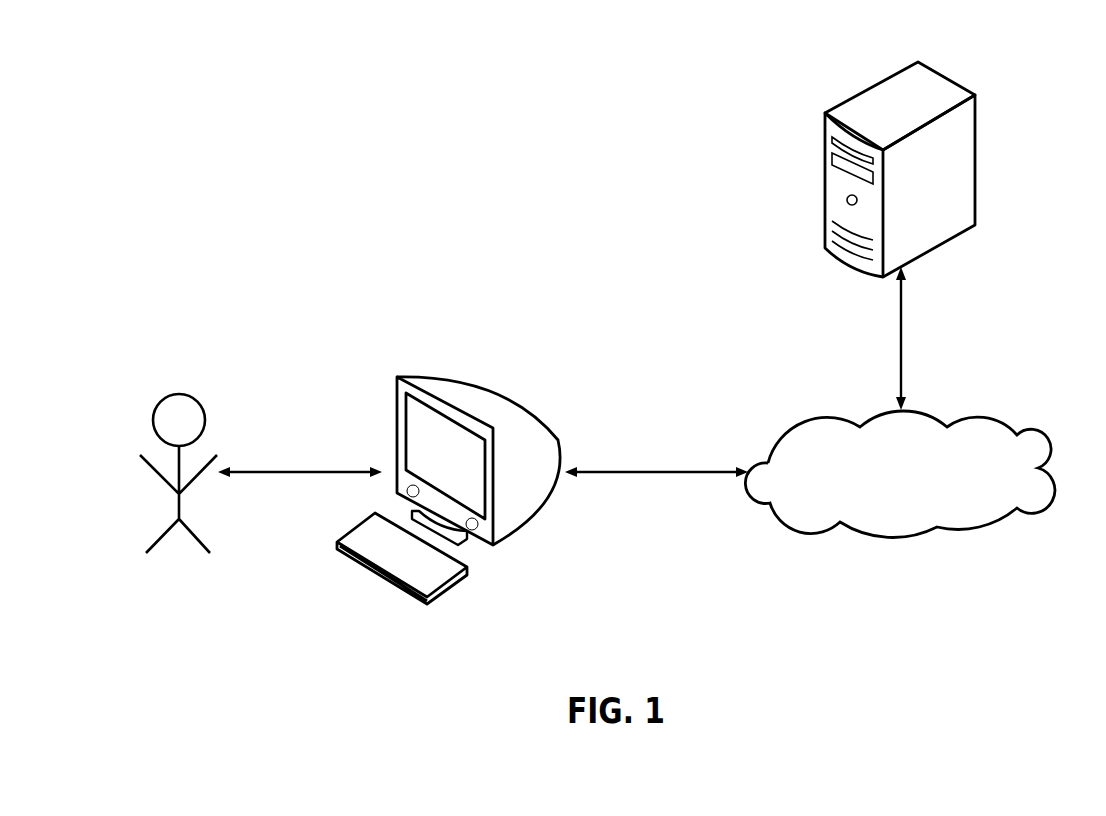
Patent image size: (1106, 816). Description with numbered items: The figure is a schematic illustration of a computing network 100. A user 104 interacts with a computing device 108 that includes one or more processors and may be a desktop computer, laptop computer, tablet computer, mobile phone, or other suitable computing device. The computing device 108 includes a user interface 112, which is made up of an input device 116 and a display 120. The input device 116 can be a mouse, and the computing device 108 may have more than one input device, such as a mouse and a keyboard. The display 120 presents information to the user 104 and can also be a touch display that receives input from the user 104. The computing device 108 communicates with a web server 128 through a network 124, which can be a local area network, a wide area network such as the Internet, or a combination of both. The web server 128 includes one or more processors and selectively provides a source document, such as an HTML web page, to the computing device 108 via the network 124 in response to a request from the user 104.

The computing network 100 is at (255, 67).
The user 104 is at (151, 373).
The computing device 108 is at (490, 459).
The user interface 112 is at (351, 432).
The input device 116 is at (454, 594).
The display 120 is at (473, 480).
The network 124 is at (1040, 435).
The web server 128 is at (948, 72).